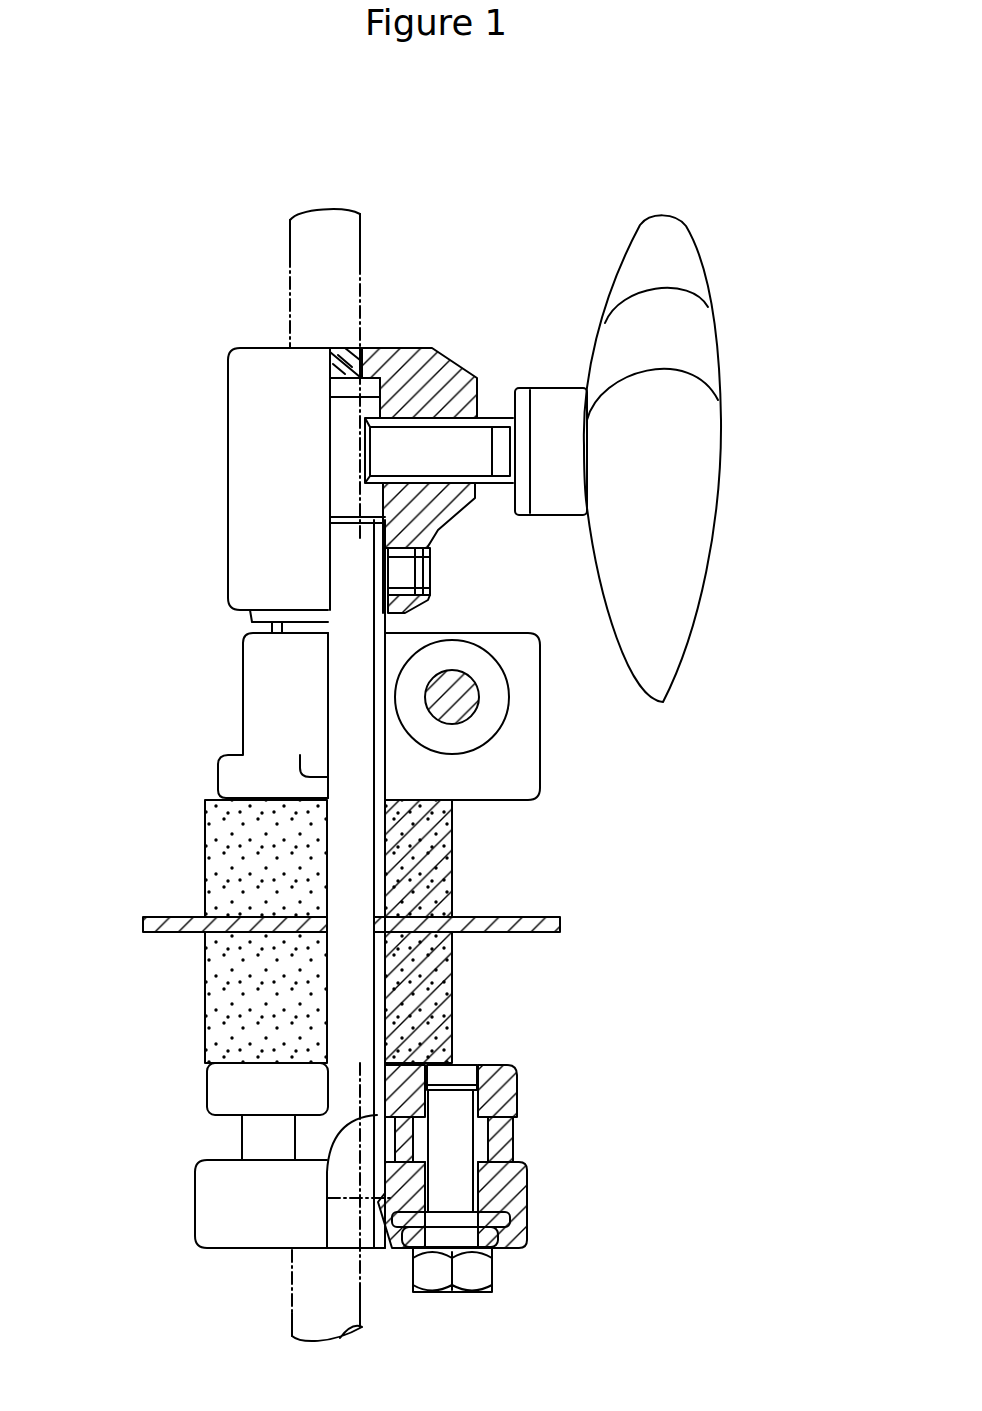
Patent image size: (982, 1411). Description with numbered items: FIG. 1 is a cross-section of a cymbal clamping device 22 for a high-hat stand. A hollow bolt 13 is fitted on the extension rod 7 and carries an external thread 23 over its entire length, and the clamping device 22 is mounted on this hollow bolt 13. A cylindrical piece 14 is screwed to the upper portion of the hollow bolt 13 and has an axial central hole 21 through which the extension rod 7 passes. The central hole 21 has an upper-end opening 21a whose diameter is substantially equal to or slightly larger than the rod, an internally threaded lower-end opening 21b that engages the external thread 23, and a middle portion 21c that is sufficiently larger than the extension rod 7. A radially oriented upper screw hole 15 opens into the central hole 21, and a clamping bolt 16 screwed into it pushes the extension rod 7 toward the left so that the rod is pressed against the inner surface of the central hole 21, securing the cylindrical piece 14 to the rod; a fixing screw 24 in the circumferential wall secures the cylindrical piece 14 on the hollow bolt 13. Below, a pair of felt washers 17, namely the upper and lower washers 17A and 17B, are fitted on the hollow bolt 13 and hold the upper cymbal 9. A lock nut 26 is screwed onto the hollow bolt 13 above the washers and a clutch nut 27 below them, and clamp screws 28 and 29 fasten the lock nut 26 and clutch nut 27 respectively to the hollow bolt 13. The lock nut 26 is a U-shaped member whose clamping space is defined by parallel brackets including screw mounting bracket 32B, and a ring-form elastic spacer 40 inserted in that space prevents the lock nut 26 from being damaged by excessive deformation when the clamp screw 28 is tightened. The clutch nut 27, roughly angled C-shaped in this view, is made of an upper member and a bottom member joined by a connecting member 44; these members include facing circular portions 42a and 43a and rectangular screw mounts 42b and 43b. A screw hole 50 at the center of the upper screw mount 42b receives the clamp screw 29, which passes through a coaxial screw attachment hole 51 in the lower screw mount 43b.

The extension rod 7 is at (362, 232).
The upper cymbal 9 is at (167, 917).
The hollow bolt 13 is at (345, 692).
The cylindrical piece 14 is at (440, 350).
The upper screw hole 15 is at (408, 432).
The clamping bolt 16 is at (697, 609).
The felt washers 17 is at (460, 931).
The upper felt washer 17A is at (442, 887).
The lower felt washer 17B is at (445, 970).
The central hole 21 is at (244, 457).
The upper-end opening 21a is at (358, 370).
The lower-end opening 21b is at (385, 525).
The middle portion 21c is at (358, 398).
The cymbal clamping device 22 is at (860, 325).
The external thread 23 is at (385, 852).
The fixing screw 24 is at (405, 572).
The lock nut 26 is at (551, 696).
The clutch nut 27 is at (206, 1159).
The clamp screw 28 is at (458, 693).
The clamp screw 29 is at (477, 1283).
The screw mounting bracket 32B is at (534, 696).
The ring-form spacer 40 is at (505, 696).
The circular portion 42a is at (212, 1083).
The rectangular screw mount 42b is at (203, 1228).
The circular portion 43a is at (517, 1090).
The rectangular screw mount 43b is at (527, 1215).
The connecting member 44 is at (242, 1133).
The screw hole 50 is at (467, 1065).
The screw attachment hole 51 is at (475, 1180).